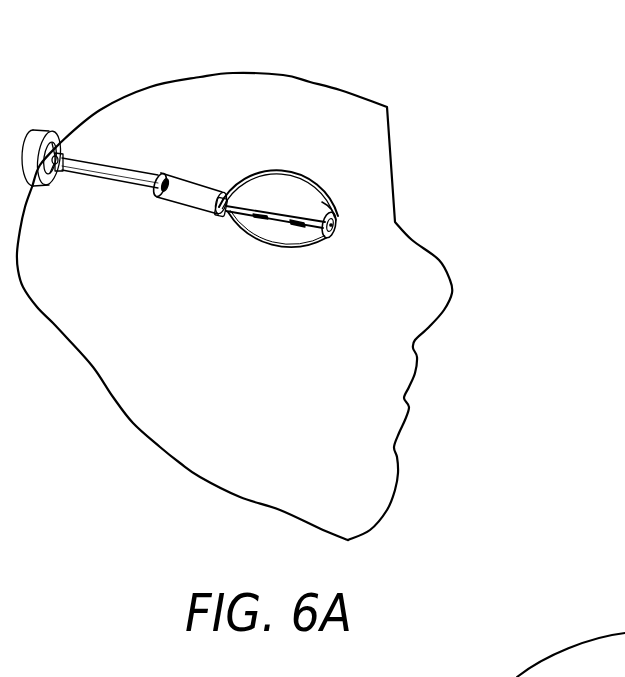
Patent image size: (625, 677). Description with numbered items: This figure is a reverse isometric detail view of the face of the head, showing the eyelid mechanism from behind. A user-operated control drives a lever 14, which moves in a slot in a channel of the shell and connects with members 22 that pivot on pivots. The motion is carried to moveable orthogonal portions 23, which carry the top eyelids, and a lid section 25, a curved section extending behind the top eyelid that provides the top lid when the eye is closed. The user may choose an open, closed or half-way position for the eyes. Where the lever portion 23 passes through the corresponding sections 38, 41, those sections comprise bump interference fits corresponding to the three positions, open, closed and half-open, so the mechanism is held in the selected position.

The lever 14 is at (96, 157).
The members 22 is at (184, 178).
The moveable orthogonal portions 23 is at (269, 214).
The lid section 25 is at (303, 198).
The section 38 is at (334, 205).
The section 41 is at (337, 228).